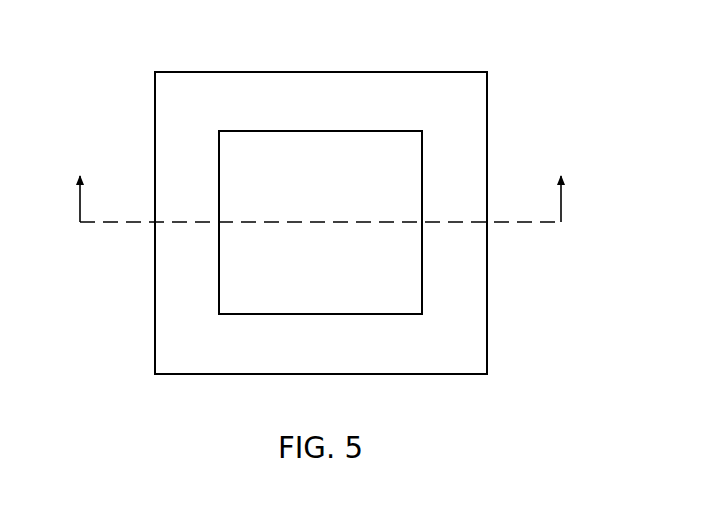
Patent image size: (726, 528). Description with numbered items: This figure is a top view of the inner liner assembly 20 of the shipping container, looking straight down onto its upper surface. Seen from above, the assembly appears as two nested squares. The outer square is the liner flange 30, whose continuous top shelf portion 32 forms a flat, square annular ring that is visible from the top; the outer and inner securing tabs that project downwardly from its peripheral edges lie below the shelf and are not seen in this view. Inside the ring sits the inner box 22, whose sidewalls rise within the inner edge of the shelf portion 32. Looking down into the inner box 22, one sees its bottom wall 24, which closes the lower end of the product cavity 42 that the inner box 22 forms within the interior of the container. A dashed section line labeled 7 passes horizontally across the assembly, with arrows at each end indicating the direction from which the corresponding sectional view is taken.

The inner liner assembly 20 is at (496, 99).
The inner box 22 is at (253, 262).
The bottom wall 24 is at (384, 145).
The liner flange 30 is at (492, 328).
The top shelf portion 32 is at (165, 347).
The product cavity 42 is at (275, 144).
The section line 7- 7 is at (321, 184).